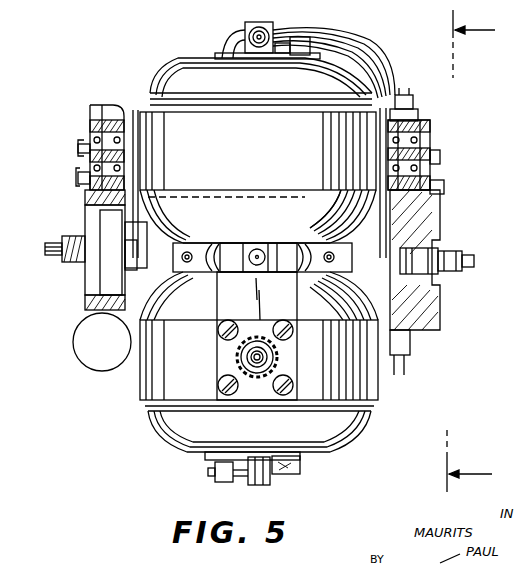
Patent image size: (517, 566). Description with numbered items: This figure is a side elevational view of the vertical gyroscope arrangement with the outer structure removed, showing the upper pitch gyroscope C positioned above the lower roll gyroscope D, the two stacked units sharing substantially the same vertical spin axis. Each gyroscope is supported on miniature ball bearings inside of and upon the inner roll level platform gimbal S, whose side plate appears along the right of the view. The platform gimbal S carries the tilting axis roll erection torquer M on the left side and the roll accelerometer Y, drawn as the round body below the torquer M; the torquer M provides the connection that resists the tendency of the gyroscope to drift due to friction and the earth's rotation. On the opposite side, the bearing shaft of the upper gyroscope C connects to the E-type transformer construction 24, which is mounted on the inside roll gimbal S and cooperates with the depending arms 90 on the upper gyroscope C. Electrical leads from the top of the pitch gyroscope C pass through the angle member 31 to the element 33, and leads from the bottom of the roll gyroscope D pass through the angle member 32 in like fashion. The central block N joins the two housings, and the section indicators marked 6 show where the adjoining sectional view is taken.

The angle member 31 is at (302, 47).
The element 33 is at (414, 104).
The E-type transformer construction 24 is at (420, 256).
The inner roll level platform gimbal S is at (425, 313).
The depending arms 90 is at (342, 218).
The connecting block N is at (262, 257).
The tilting axis roll erection torquer M is at (106, 273).
The roll accelerometer Y is at (82, 358).
The lower roll gyroscope D is at (160, 435).
The upper pitch gyroscope C is at (150, 110).
The angle member 32 is at (290, 466).
The section line 6- 6 is at (476, 251).